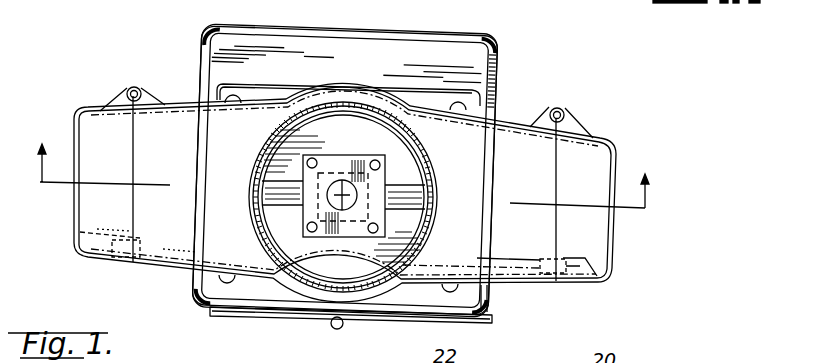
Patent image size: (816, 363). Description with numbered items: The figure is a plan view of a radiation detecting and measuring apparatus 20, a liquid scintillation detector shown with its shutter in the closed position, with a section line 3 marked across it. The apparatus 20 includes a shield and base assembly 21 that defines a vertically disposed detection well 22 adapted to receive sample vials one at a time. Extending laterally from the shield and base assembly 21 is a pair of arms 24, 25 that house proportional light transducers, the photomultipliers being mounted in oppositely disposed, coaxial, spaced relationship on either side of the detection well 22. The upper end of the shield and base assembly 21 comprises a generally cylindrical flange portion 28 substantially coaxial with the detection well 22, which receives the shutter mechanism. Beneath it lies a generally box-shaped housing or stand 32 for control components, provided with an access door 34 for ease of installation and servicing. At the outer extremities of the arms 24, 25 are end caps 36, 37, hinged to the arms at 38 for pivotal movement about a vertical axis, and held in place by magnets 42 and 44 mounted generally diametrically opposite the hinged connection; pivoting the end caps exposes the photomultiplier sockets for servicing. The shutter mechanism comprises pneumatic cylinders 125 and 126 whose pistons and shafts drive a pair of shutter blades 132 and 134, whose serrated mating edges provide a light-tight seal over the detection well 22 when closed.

The radiation detecting and measuring apparatus 20 is at (632, 90).
The shield and base assembly 21 is at (536, 292).
The detection well 22 is at (340, 183).
The arm 24 is at (160, 264).
The arm 25 is at (518, 290).
The cylindrical flange portion 28 is at (437, 190).
The housing or stand 32 is at (197, 54).
The access door 34 is at (285, 316).
The end cap 36 is at (78, 114).
The end cap 37 is at (618, 153).
The hinge 38 is at (131, 88).
The magnet 42 is at (100, 258).
The magnet 44 is at (597, 283).
The pneumatic cylinder 125 is at (403, 211).
The pneumatic cylinder 126 is at (270, 183).
The shutter blade 132 is at (377, 186).
The shutter blade 134 is at (309, 207).
The section line 3- 3 is at (338, 199).